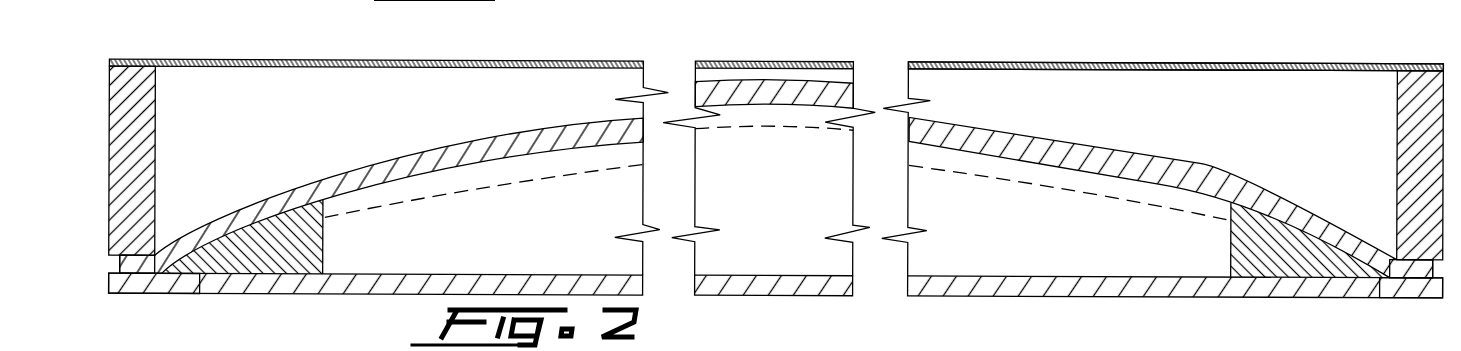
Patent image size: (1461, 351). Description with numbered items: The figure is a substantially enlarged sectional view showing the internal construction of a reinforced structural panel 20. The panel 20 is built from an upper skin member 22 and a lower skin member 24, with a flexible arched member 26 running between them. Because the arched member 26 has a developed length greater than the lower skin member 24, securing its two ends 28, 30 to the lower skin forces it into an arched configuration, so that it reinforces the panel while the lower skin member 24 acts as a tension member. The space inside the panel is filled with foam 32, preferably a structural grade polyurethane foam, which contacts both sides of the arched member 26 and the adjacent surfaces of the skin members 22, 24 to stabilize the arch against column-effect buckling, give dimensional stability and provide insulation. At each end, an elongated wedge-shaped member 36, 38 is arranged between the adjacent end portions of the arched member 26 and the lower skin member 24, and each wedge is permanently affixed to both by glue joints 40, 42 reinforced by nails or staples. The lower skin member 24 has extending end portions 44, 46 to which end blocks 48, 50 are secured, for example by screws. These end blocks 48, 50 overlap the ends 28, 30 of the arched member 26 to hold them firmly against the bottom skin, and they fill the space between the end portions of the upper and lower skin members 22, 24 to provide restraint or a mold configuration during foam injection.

The reinforced structural panel 20 is at (996, 62).
The upper skin member 22 is at (1218, 59).
The lower skin member 24 is at (1022, 297).
The flexible arched member 26 is at (1075, 137).
The end of arched member 28 is at (1415, 262).
The end of arched member 30 is at (122, 260).
The foam 32 is at (294, 115).
The wedge-shaped member 36 is at (306, 245).
The wedge-shaped member 38 is at (1240, 259).
The glue joint 40 is at (272, 213).
The glue joint 42 is at (233, 265).
The extending end portion of lower skin member 44 is at (148, 293).
The extending end portion of lower skin member 46 is at (1408, 297).
The end block 48 is at (125, 112).
The end block 50 is at (1430, 125).